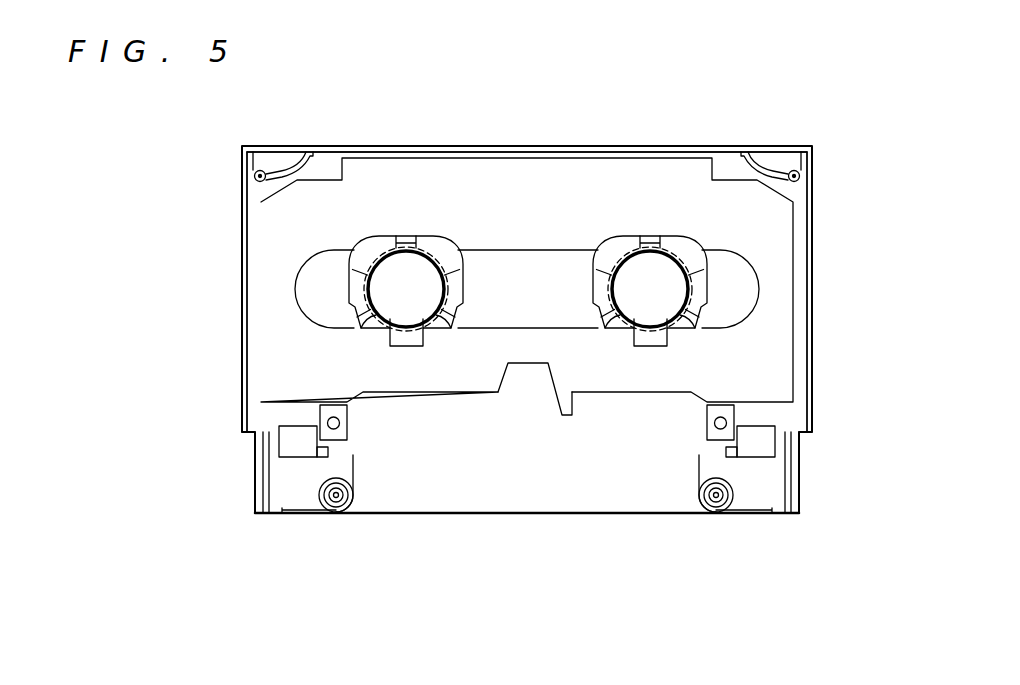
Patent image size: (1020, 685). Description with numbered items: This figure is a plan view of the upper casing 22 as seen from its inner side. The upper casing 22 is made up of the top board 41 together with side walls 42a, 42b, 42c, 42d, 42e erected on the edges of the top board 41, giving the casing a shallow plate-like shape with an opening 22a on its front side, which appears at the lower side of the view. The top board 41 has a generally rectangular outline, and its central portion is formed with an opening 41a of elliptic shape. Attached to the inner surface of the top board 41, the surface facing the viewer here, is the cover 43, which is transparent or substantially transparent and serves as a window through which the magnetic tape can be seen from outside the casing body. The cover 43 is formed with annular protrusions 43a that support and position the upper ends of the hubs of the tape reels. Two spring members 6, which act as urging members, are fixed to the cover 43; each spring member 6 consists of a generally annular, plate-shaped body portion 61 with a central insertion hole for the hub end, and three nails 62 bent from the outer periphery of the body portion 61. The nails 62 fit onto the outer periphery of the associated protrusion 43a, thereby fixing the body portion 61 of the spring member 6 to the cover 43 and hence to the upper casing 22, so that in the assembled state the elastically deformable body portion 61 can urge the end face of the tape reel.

The upper casing 22 is at (200, 198).
The opening 22a is at (560, 514).
The top board 41 is at (730, 172).
The opening 41a is at (525, 314).
The side wall 42a is at (397, 152).
The side wall 42b is at (812, 284).
The side wall 42c is at (245, 278).
The side wall 42d is at (812, 512).
The side wall 42e is at (242, 508).
The cover 43 is at (532, 180).
The annular protrusion 43a is at (447, 249).
The spring member 6 is at (467, 285).
The body portion 61 is at (380, 248).
The nail 62 is at (404, 237).